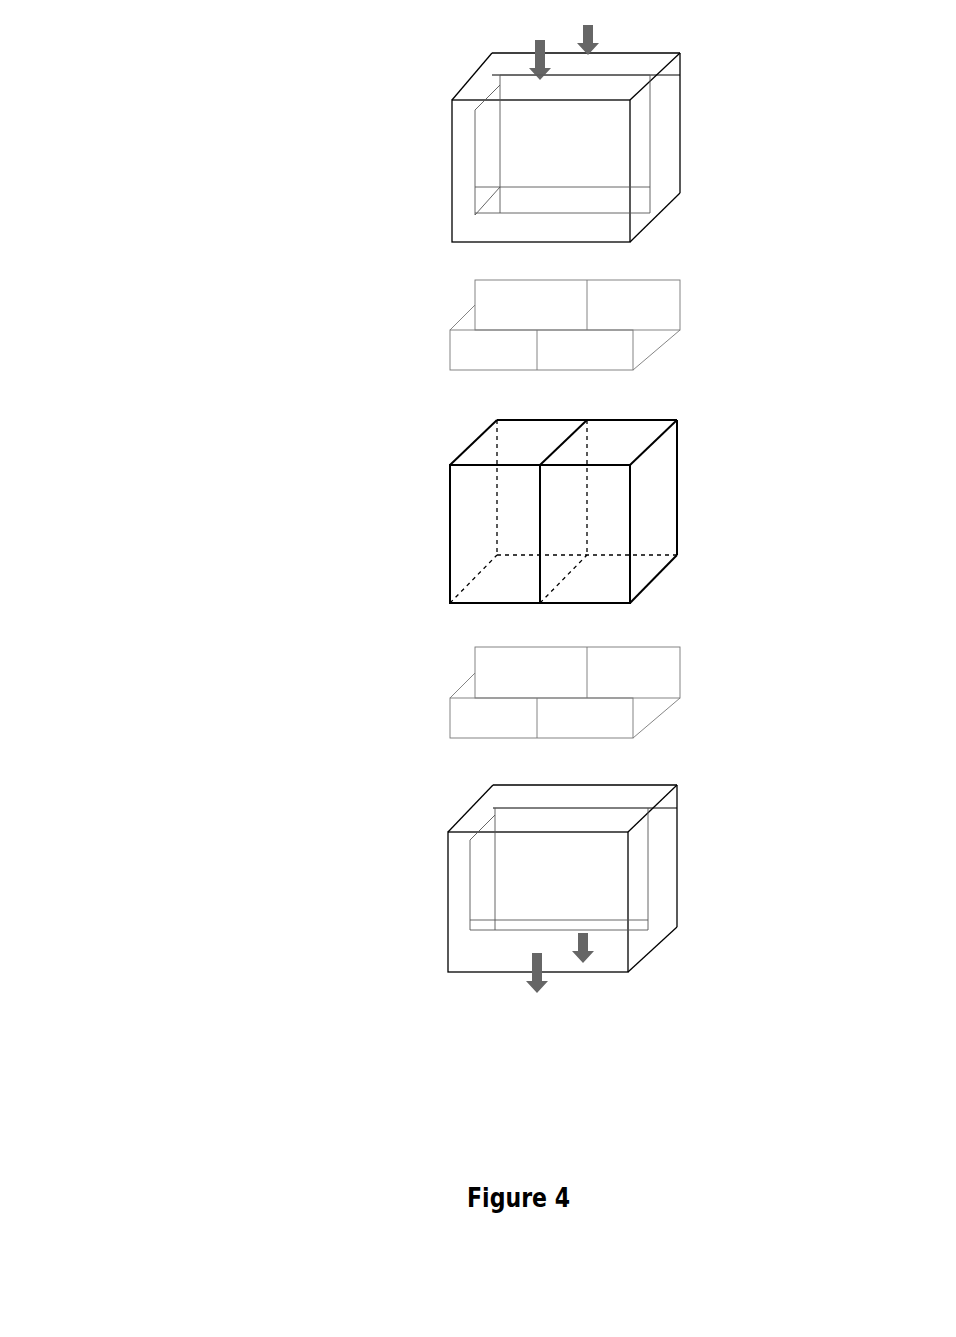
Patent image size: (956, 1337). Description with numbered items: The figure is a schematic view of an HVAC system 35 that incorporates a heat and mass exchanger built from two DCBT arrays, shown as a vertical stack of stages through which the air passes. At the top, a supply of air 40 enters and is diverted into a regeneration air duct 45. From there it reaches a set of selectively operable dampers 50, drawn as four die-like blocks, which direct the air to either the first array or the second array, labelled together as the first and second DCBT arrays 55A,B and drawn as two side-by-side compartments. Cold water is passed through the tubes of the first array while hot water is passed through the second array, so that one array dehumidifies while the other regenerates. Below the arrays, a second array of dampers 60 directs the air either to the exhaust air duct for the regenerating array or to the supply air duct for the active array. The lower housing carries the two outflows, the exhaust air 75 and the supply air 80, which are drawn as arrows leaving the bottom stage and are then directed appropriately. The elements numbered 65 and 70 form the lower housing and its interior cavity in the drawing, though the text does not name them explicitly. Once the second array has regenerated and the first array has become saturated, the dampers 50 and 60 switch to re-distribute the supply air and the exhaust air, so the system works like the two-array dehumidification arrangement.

The HVAC system 35 is at (178, 1037).
The supply of air 40 is at (480, 68).
The regeneration air duct 45 is at (437, 148).
The selectively operable dampers 50 is at (448, 320).
The first and second DCBT arrays 55A,B is at (548, 440).
The second array of dampers 60 is at (447, 687).
The package base housing 65 is at (473, 795).
The inner cavity of base 70 is at (437, 888).
The exhaust air 75 is at (555, 947).
The supply air 80 is at (503, 985).